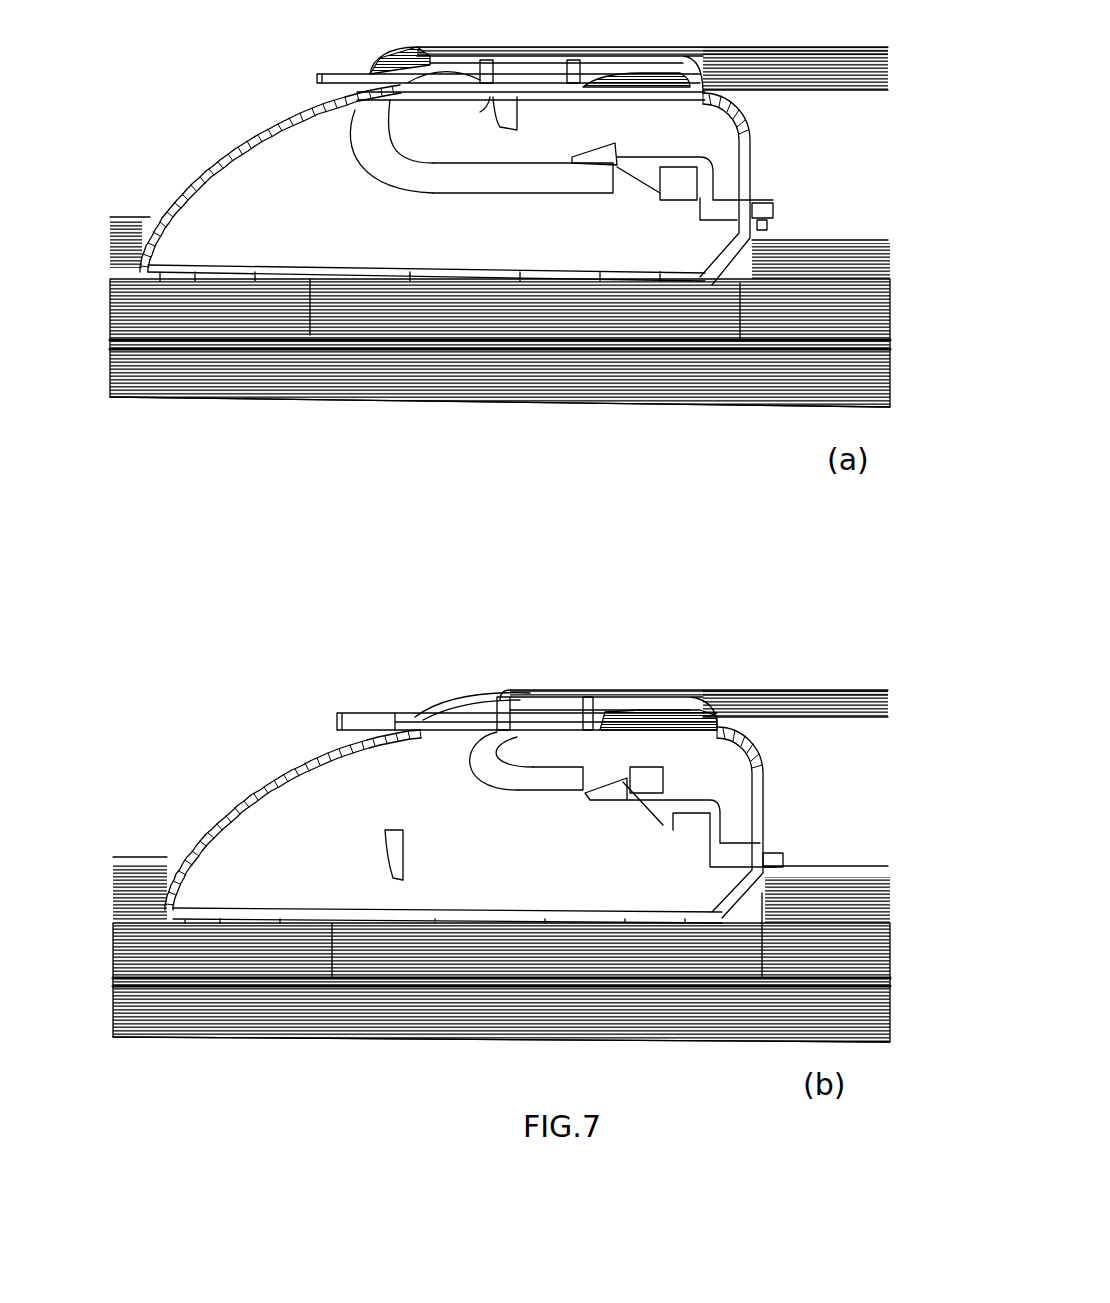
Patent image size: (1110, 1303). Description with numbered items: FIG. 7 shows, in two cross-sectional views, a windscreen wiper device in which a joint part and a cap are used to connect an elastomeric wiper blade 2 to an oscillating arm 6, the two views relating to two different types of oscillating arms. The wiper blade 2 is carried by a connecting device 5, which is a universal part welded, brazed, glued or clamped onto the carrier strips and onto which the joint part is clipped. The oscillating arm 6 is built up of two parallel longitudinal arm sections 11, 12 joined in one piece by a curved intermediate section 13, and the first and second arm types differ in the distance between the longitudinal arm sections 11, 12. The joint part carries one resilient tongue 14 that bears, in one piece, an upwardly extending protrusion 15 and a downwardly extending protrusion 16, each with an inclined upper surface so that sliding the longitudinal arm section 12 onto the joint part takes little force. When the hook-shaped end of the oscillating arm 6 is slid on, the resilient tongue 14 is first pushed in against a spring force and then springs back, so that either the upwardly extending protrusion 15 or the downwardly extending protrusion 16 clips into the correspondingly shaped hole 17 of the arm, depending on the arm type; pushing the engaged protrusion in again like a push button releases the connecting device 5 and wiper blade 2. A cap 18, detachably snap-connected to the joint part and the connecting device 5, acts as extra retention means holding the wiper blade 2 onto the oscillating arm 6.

The wiper blade 2 is at (643, 398).
The connecting device 5 is at (505, 337).
The oscillating arm 6 is at (800, 55).
The longitudinal arm section 11 is at (540, 50).
The longitudinal arm section 12 is at (475, 182).
The curved intermediate section 13 is at (355, 143).
The resilient tongue 14 is at (762, 200).
The upwardly extending protrusion 15 is at (620, 148).
The downwardly extending protrusion 16 is at (652, 200).
The hole 17 is at (617, 187).
The cap 18 is at (215, 190).